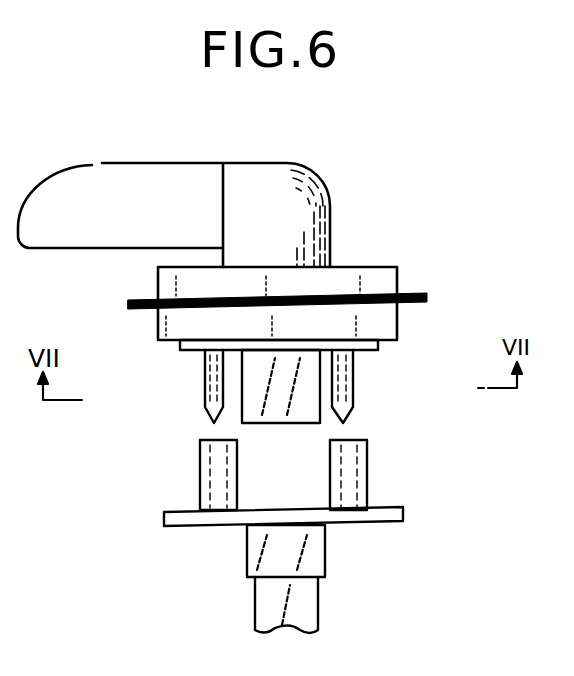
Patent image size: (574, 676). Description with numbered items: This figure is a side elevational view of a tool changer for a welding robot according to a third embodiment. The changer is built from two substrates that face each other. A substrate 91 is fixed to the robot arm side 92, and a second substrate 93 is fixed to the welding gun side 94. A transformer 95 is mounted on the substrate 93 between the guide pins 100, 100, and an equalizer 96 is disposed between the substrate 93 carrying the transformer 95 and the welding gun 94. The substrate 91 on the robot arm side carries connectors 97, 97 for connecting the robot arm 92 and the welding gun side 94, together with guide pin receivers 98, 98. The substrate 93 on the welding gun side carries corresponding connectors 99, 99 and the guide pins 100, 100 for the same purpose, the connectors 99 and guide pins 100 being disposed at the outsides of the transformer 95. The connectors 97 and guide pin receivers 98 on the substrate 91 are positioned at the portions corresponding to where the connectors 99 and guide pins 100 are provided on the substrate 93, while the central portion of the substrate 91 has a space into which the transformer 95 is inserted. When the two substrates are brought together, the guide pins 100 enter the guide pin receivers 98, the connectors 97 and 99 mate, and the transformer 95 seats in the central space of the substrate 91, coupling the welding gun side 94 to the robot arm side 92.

The substrate 91 is at (398, 524).
The robot arm side 92 is at (307, 603).
The substrate 93 is at (367, 342).
The welding gun side 94 is at (282, 177).
The transformer 95 is at (300, 410).
The equalizer 96 is at (377, 282).
The connectors 97 is at (207, 482).
The guide pin receivers 98 is at (266, 475).
The connectors 99 is at (207, 390).
The guide pins 100 is at (282, 396).